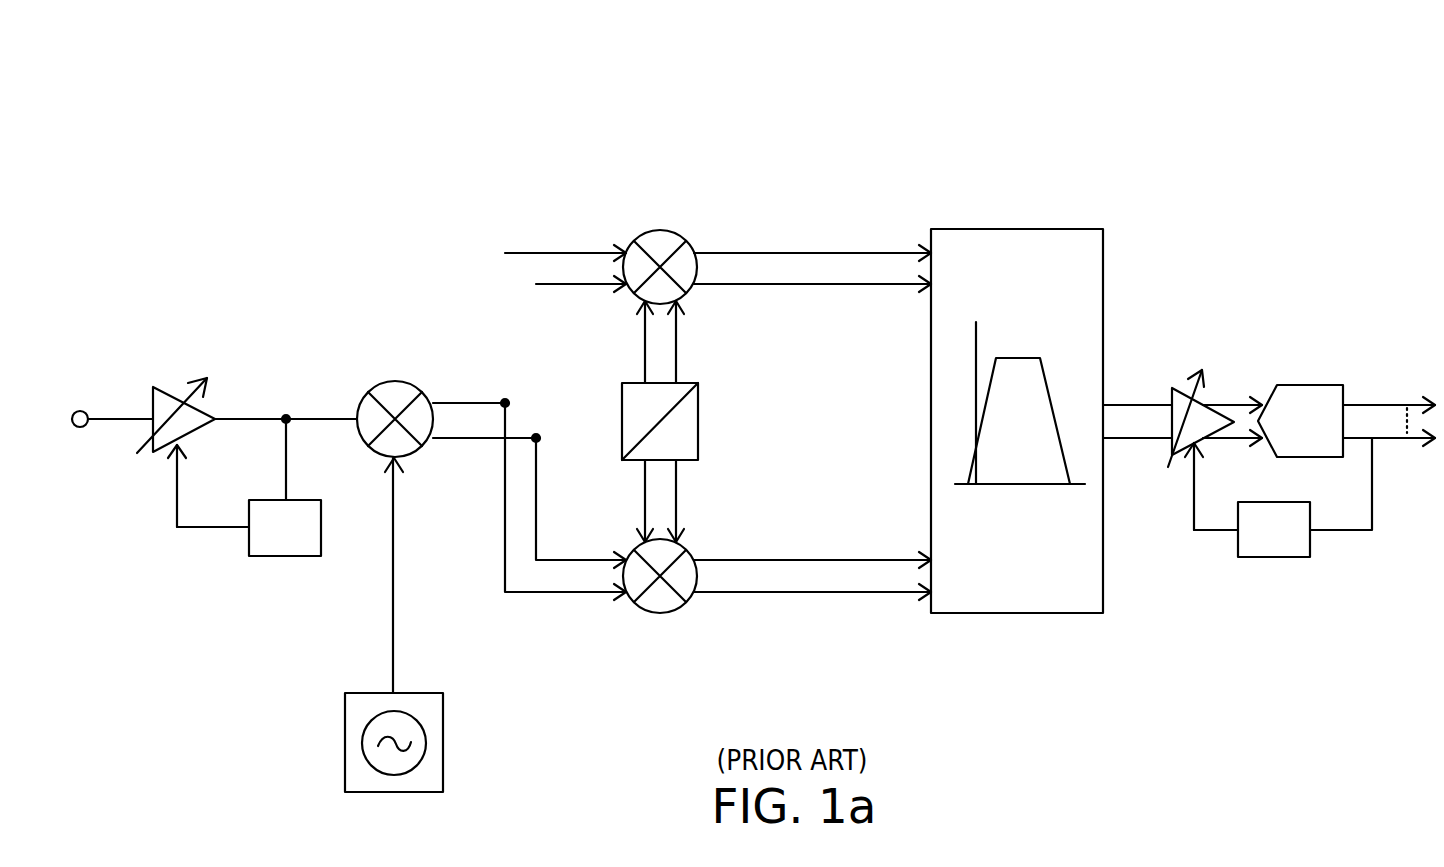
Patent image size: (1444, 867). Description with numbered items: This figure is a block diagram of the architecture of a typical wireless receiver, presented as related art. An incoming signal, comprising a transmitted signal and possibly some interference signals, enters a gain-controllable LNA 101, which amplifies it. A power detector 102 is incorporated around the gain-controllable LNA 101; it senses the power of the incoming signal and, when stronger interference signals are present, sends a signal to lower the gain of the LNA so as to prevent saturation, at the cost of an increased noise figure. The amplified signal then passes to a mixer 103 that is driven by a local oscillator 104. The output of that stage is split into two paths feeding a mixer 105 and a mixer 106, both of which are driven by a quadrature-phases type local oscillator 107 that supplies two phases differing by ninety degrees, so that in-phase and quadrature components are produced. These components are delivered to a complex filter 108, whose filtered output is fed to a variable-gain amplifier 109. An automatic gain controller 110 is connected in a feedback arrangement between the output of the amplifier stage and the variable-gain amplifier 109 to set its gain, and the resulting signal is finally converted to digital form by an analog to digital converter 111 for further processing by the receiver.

The gain-controllable LNA 101 is at (163, 385).
The power detector 102 is at (282, 557).
The mixer 103 is at (389, 380).
The local oscillator 104 is at (345, 742).
The mixer 105 is at (659, 229).
The mixer 106 is at (657, 614).
The quadrature-phases type local oscillator 107 is at (698, 420).
The complex filter 108 is at (1031, 229).
The variable-gain amplifier 109 is at (1177, 389).
The automatic gain controller 110 is at (1273, 557).
The analog to digital converter 111 is at (1312, 386).